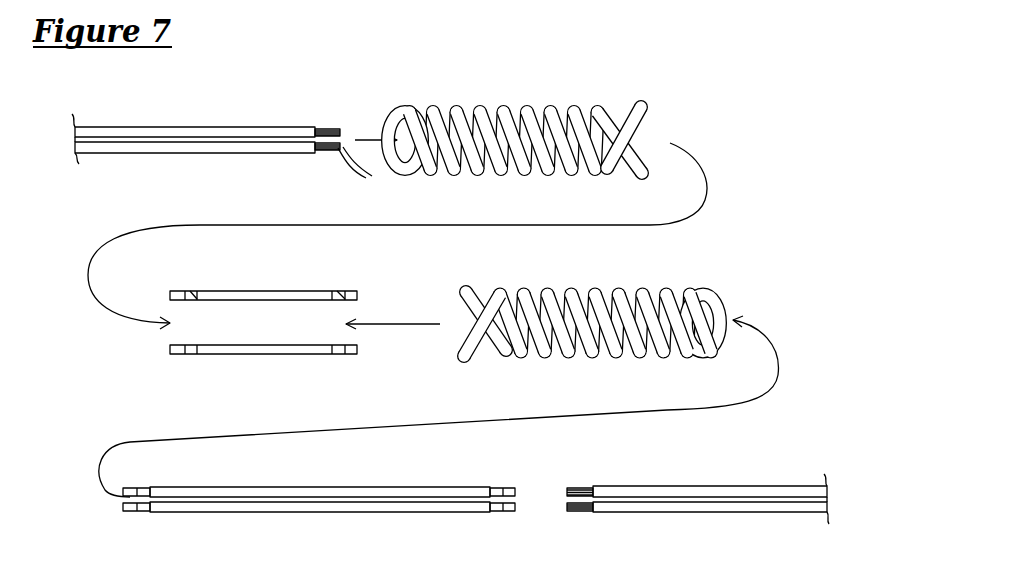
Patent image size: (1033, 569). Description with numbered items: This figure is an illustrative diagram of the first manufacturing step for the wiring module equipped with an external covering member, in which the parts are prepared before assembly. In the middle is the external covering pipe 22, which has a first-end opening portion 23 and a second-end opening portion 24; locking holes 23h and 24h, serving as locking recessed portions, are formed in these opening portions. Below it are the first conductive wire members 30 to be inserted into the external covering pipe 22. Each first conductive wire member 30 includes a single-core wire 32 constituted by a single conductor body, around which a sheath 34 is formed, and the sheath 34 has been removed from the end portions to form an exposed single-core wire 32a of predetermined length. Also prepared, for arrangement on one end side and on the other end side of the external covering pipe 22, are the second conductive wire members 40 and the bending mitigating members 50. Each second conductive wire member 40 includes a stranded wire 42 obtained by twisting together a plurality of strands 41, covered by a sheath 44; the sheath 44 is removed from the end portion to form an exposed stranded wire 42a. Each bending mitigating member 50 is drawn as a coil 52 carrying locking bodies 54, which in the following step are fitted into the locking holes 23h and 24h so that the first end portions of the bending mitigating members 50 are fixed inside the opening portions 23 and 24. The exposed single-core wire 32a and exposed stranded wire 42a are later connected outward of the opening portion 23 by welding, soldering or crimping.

The external covering pipe 22 is at (267, 298).
The first-end opening portion 23 is at (165, 298).
The locking hole 23h is at (185, 292).
The second-end opening portion 24 is at (367, 298).
The locking hole 24h is at (337, 292).
The first conductive wire member 30 is at (318, 497).
The single-core wire 32 is at (337, 522).
The exposed single-core wire 32a is at (126, 497).
The sheath 34 is at (375, 505).
The second conductive wire member 40 is at (130, 141).
The strand 41 is at (364, 168).
The stranded wire 42 is at (482, 314).
The exposed stranded wire 42a is at (324, 129).
The sheath 44 is at (197, 146).
The bending mitigating member 50 is at (554, 214).
The coil portion 52 is at (533, 108).
The locking body 54 is at (649, 158).